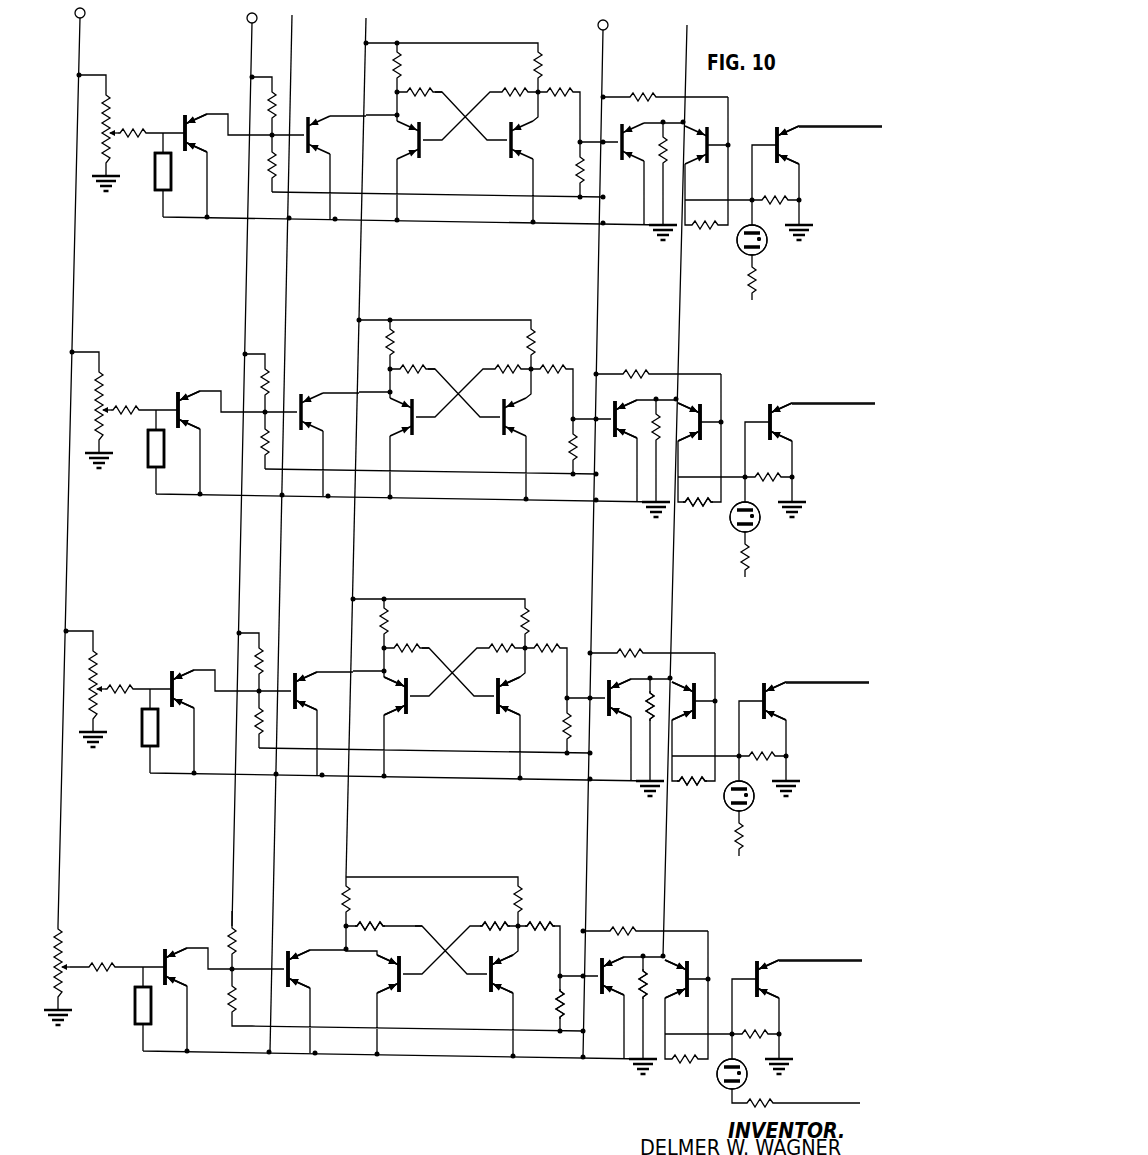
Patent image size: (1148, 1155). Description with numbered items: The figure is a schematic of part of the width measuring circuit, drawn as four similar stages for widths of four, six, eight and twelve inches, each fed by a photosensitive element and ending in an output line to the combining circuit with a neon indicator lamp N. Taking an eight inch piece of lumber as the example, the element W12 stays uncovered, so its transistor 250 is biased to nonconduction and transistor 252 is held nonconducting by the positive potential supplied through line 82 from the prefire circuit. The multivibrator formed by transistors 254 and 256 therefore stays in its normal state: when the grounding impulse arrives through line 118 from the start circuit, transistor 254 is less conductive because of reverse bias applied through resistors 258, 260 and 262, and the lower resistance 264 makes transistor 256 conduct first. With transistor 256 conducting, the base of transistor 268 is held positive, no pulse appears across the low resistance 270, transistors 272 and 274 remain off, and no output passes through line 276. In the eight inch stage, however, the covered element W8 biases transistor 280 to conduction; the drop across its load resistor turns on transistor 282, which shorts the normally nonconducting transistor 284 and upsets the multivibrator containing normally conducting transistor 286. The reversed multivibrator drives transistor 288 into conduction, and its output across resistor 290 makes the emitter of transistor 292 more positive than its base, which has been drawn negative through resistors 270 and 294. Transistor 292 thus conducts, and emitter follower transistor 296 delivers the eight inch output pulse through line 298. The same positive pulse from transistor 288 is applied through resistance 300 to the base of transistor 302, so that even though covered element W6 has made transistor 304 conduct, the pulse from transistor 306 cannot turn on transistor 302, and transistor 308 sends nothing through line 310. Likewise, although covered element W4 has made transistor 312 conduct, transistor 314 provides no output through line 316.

The line 118 is at (366, 32).
The line 82 is at (294, 71).
The transistor 312 is at (183, 125).
The photosensitive element W4 is at (155, 186).
The transistor 314 is at (775, 135).
The line 316 is at (856, 127).
The transistor 304 is at (176, 400).
The photosensitive element W6 is at (148, 450).
The transistor 306 is at (620, 437).
The transistor 302 is at (690, 440).
The resistance 300 is at (698, 508).
The transistor 308 is at (771, 413).
The line 310 is at (850, 403).
The transistor 280 is at (171, 680).
The transistor 282 is at (295, 684).
The photosensitive element W8 is at (145, 745).
The transistor 284 is at (398, 710).
The transistor 286 is at (490, 710).
The transistor 288 is at (616, 714).
The resistor 290 is at (654, 716).
The transistor 292 is at (683, 721).
The resistor 294 is at (695, 790).
The emitter follower transistor 296 is at (763, 692).
The line 298 is at (846, 683).
The transistor 250 is at (163, 957).
The transistor 252 is at (290, 957).
The photosensitive element W12 is at (135, 1004).
The transistor 254 is at (394, 991).
The transistor 256 is at (489, 991).
The resistor 258 is at (556, 1010).
The resistor 260 is at (548, 921).
The resistor 262 is at (490, 921).
The resistance 264 is at (386, 922).
The transistor 268 is at (612, 993).
The resistance 270 is at (650, 1012).
The transistor 272 is at (687, 996).
The transistor 274 is at (756, 974).
The line 276 is at (840, 961).
The indicator lamp N is at (765, 253).